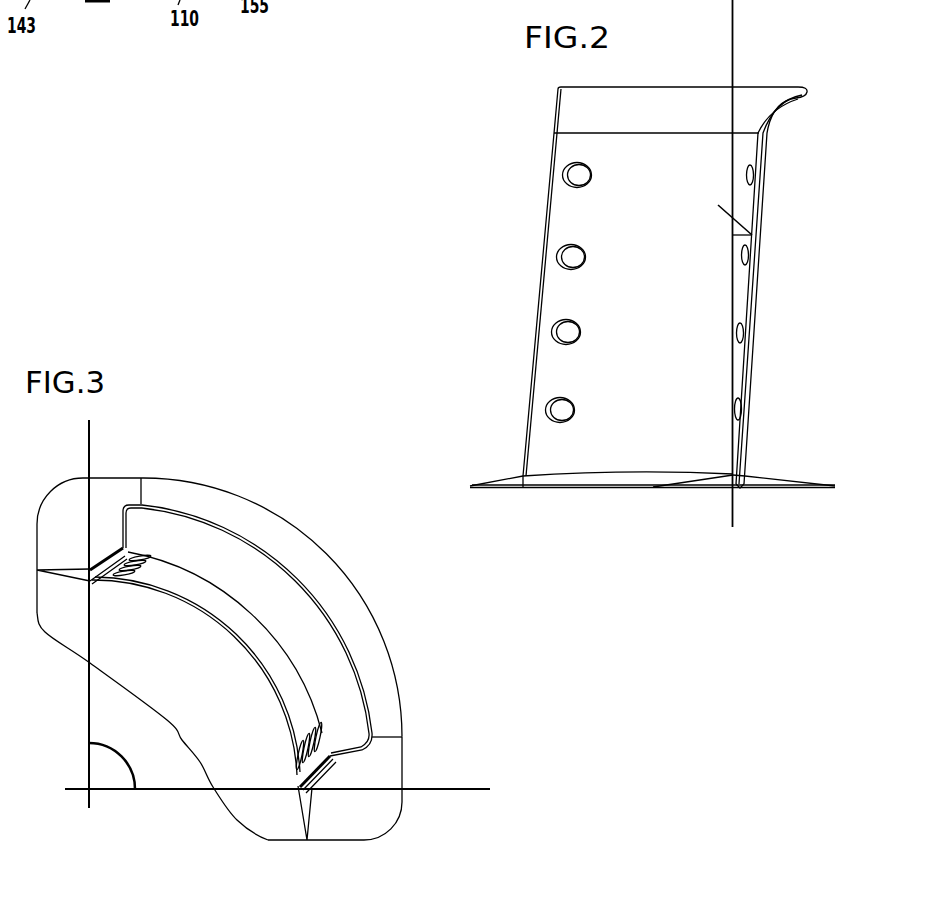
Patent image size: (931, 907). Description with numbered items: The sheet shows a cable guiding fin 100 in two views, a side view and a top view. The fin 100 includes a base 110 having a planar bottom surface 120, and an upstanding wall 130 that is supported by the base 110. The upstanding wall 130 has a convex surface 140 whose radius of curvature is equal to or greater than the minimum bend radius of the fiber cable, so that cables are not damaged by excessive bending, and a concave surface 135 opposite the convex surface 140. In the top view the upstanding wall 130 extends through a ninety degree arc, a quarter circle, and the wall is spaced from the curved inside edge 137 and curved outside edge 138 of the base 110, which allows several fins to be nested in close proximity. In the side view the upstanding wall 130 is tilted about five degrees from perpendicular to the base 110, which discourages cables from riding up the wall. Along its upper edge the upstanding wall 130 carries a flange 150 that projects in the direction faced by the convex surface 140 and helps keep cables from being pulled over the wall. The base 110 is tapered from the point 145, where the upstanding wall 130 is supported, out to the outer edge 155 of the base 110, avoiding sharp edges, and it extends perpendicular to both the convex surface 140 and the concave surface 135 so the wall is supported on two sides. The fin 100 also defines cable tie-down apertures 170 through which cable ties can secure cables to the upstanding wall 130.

In FIG. 2, the cable guiding fin 100 is at (822, 122).
In FIG. 3, the cable guiding fin 100 is at (458, 706).
In FIG. 2, the base 110 is at (768, 478).
In FIG. 3, the base 110 is at (137, 648).
In FIG. 2, the planar bottom surface 120 is at (615, 493).
In FIG. 2, the upstanding wall 130 is at (678, 346).
In FIG. 3, the upstanding wall 130 is at (272, 665).
In FIG. 2, the concave surface 135 is at (747, 293).
In FIG. 3, the inside edge 137 is at (181, 738).
In FIG. 3, the outside edge 138 is at (347, 578).
In FIG. 2, the convex surface 140 is at (757, 368).
In FIG. 2, the point 145 is at (523, 476).
In FIG. 2, the flange 150 is at (597, 108).
In FIG. 3, the flange 150 is at (200, 550).
In FIG. 2, the outer edge 155 is at (470, 488).
In FIG. 2, the cable tie-down apertures 170 is at (555, 256).